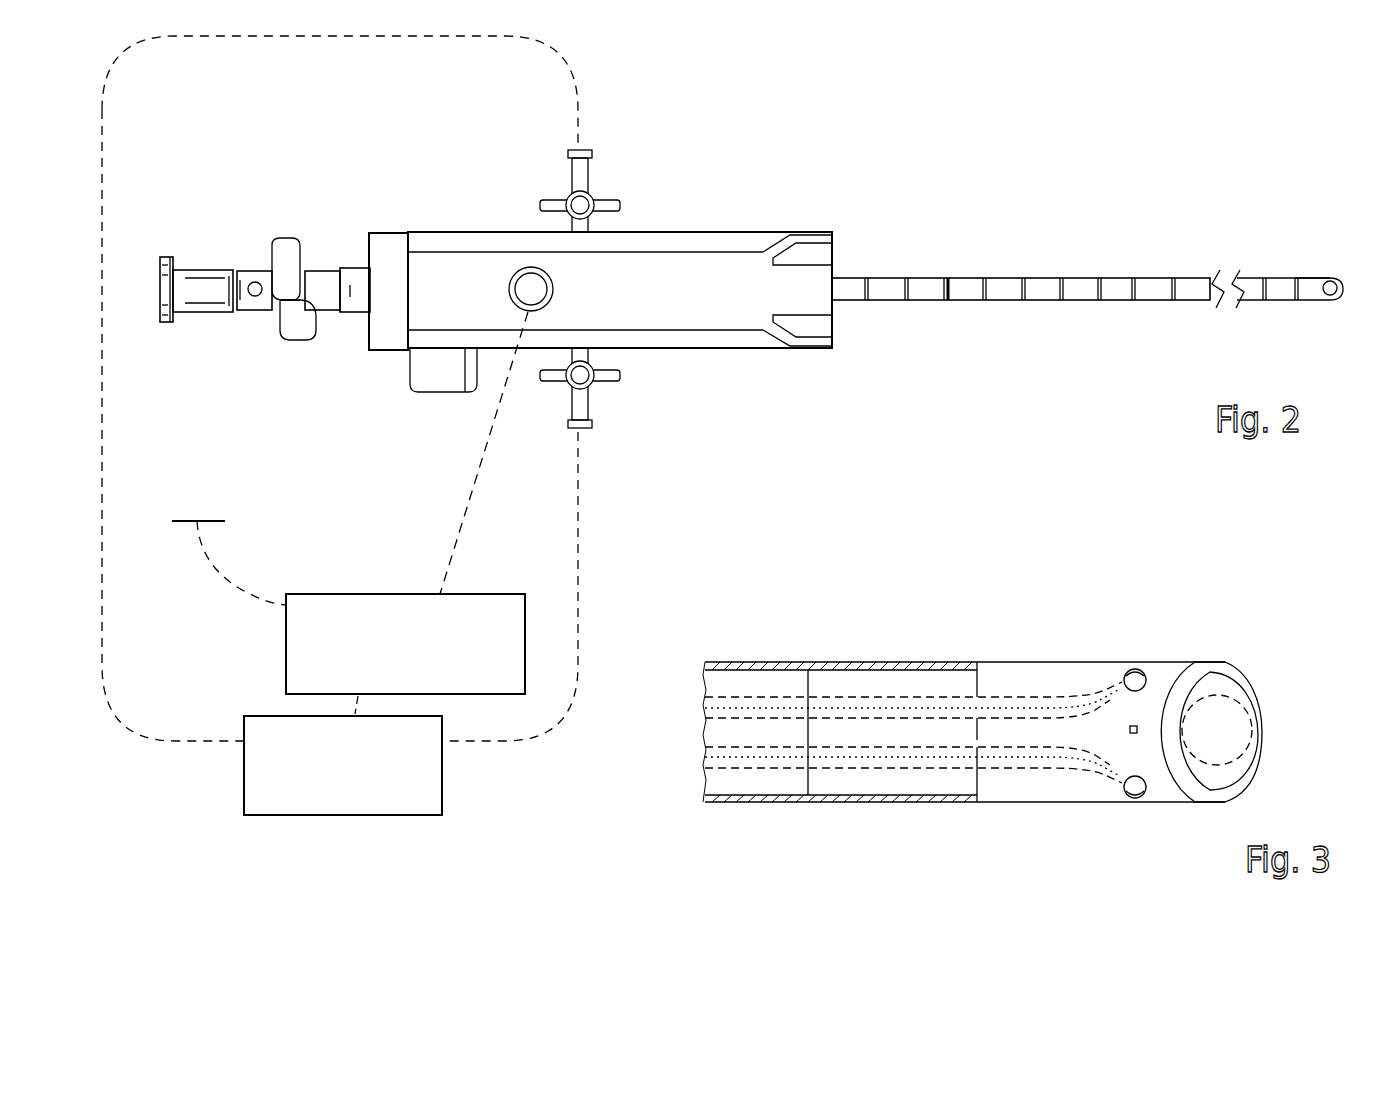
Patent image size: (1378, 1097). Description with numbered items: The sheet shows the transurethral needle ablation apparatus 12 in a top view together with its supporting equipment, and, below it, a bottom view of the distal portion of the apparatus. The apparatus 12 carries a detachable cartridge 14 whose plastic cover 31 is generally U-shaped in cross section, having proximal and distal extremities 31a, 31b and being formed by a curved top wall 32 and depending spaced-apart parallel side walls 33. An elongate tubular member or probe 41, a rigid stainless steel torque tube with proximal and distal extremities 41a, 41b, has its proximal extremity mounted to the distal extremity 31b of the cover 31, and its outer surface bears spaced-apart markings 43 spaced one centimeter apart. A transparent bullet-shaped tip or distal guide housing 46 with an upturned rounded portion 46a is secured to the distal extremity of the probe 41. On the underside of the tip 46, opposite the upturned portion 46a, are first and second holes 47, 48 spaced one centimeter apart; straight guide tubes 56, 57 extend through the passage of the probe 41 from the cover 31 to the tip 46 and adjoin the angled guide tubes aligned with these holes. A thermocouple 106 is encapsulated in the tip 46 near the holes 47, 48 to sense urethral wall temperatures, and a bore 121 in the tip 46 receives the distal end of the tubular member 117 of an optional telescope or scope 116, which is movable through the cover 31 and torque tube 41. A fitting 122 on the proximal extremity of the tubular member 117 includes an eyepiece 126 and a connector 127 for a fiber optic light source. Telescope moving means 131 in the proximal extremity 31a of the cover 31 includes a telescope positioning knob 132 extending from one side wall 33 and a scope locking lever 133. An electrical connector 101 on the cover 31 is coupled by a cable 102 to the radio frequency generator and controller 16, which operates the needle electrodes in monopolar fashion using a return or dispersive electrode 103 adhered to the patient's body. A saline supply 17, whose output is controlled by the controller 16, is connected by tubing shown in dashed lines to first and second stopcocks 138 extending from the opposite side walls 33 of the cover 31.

In FIG. 2, the transurethral needle ablation apparatus 12 is at (952, 98).
In FIG. 2, the detachable cartridge 14 is at (604, 295).
In FIG. 2, the radio frequency generator and controller 16 is at (511, 687).
In FIG. 2, the saline supply 17 is at (431, 807).
In FIG. 2, the cover 31 is at (648, 287).
In FIG. 2, the proximal extremity of cover 31a is at (438, 272).
In FIG. 2, the distal extremity of cover 31b is at (832, 272).
In FIG. 2, the curved top wall 32 is at (670, 310).
In FIG. 2, the side walls 33 is at (766, 232).
In FIG. 2, the elongate tubular member or probe 41 is at (1097, 282).
In FIG. 3, the elongate tubular member or probe 41 is at (775, 660).
In FIG. 2, the proximal extremity of probe 41a is at (858, 302).
In FIG. 2, the distal extremity of probe 41b is at (1278, 302).
In FIG. 2, the markings 43 is at (990, 278).
In FIG. 2, the bullet-shaped tip or distal guide housing 46 is at (1308, 274).
In FIG. 2, the upturned rounded portion 46a is at (1332, 278).
In FIG. 3, the first hole 47 is at (1130, 670).
In FIG. 3, the second hole 48 is at (1135, 800).
In FIG. 3, the first straight guide tube 56 is at (940, 697).
In FIG. 3, the second straight guide tube 57 is at (912, 770).
In FIG. 2, the electrical connector 101 is at (508, 290).
In FIG. 2, the cable 102 is at (473, 503).
In FIG. 2, the return or dispersive electrode 103 is at (212, 521).
In FIG. 3, the thermocouple 106 is at (1136, 735).
In FIG. 2, the telescope or scope 116 is at (202, 330).
In FIG. 2, the tubular member 117 is at (283, 340).
In FIG. 3, the bore 121 is at (1238, 760).
In FIG. 2, the fitting 122 is at (253, 310).
In FIG. 2, the eyepiece 126 is at (168, 257).
In FIG. 2, the connector 127 is at (257, 280).
In FIG. 2, the telescope moving means 131 is at (354, 336).
In FIG. 2, the telescope positioning knob 132 is at (428, 392).
In FIG. 2, the scope locking lever 133 is at (288, 240).
In FIG. 2, the fluid connectors or stopcocks 138 is at (594, 170).